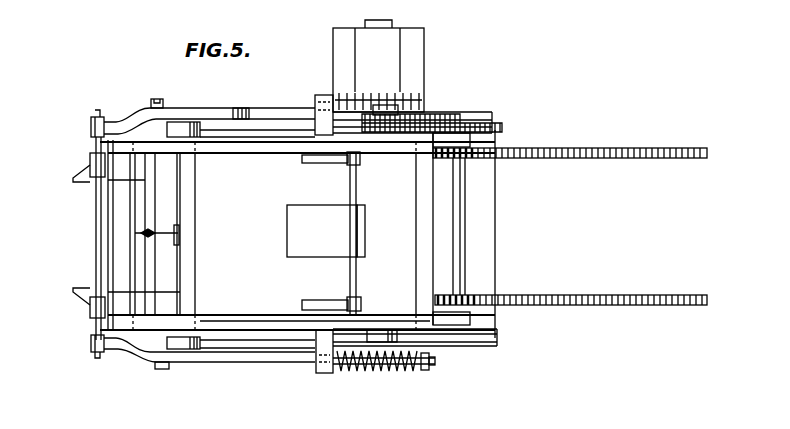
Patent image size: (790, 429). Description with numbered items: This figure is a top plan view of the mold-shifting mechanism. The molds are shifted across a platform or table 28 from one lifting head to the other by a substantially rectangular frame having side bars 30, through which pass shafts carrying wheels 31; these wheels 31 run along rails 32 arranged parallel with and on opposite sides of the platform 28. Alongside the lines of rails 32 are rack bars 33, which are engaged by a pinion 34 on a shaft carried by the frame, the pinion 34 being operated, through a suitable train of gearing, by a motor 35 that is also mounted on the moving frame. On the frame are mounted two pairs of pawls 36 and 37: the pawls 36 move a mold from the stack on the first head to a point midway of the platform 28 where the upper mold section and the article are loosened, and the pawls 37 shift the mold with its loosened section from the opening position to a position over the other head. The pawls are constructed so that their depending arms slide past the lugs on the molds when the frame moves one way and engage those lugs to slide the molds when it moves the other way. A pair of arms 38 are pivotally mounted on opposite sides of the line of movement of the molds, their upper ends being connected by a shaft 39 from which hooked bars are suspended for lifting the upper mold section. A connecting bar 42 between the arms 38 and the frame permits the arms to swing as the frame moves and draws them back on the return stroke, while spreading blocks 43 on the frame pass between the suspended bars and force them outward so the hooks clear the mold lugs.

The platform 28 is at (297, 231).
The side bars 30 is at (228, 322).
The wheels 31 is at (187, 127).
The rails 32 is at (267, 122).
The rack bars 33 is at (598, 156).
The pinion 34 is at (468, 158).
The motor 35 is at (400, 60).
The pawls 36 is at (316, 163).
The pawls 37 is at (163, 243).
The arms 38 is at (140, 113).
The shaft 39 is at (92, 233).
The connecting bar 42 is at (255, 104).
The spreading blocks 43 is at (80, 173).